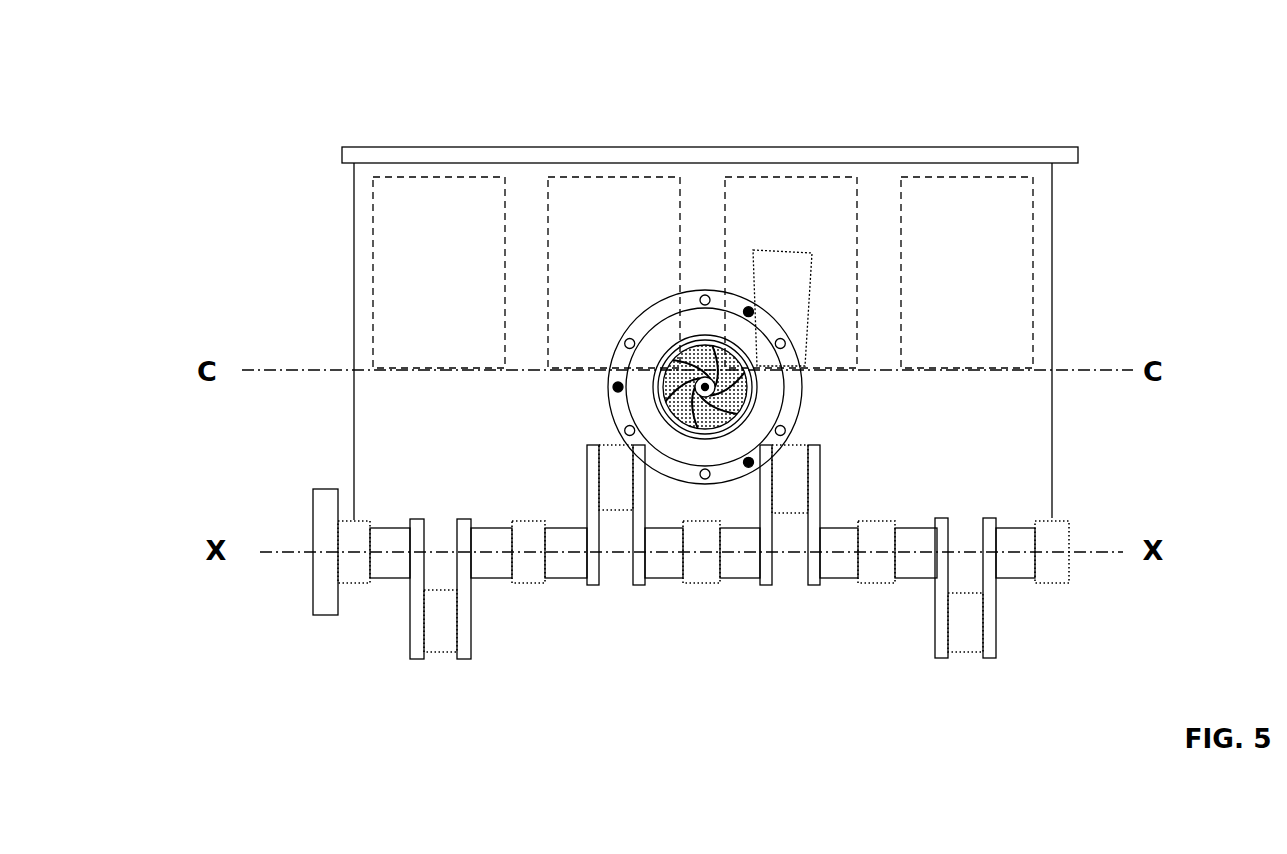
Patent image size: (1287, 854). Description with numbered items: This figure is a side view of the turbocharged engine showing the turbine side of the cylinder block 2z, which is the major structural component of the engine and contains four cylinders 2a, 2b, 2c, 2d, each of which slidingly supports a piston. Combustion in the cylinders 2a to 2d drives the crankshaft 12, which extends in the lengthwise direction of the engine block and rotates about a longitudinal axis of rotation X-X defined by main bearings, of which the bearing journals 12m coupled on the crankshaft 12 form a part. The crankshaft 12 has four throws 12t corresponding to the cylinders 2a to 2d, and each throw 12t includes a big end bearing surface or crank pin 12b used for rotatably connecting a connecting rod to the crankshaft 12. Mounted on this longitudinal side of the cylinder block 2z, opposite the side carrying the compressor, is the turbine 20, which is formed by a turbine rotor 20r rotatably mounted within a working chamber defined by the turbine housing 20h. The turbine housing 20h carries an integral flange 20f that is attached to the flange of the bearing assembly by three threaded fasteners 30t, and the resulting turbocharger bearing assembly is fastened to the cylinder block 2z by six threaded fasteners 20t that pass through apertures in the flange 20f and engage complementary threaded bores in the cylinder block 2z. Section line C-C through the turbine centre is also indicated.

The cylinder block 2z is at (443, 147).
The cylinder 2a is at (392, 243).
The cylinder 2b is at (568, 243).
The cylinder 2c is at (746, 243).
The cylinder 2d is at (919, 243).
The turbine 20 is at (554, 393).
The integral flange 20f is at (641, 263).
The turbine housing 20h is at (683, 317).
The turbine rotor 20r is at (782, 241).
The threaded fasteners 20t is at (643, 583).
The threaded fasteners 30t is at (755, 708).
The crankshaft 12 is at (312, 482).
The bearing journals 12m is at (1078, 700).
The throws 12t is at (587, 452).
The crank pin 12b is at (607, 445).